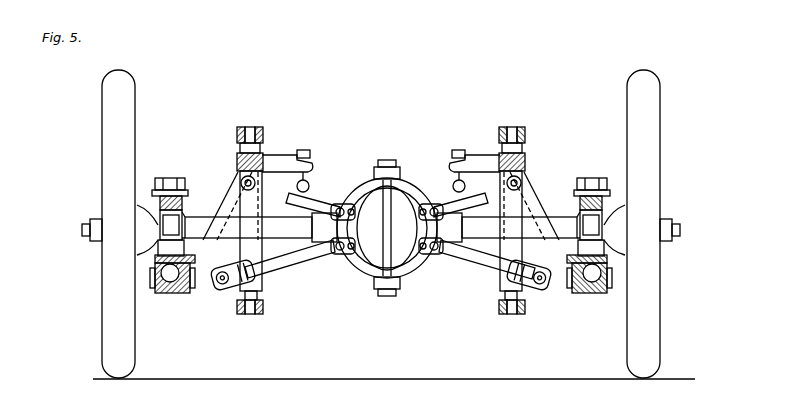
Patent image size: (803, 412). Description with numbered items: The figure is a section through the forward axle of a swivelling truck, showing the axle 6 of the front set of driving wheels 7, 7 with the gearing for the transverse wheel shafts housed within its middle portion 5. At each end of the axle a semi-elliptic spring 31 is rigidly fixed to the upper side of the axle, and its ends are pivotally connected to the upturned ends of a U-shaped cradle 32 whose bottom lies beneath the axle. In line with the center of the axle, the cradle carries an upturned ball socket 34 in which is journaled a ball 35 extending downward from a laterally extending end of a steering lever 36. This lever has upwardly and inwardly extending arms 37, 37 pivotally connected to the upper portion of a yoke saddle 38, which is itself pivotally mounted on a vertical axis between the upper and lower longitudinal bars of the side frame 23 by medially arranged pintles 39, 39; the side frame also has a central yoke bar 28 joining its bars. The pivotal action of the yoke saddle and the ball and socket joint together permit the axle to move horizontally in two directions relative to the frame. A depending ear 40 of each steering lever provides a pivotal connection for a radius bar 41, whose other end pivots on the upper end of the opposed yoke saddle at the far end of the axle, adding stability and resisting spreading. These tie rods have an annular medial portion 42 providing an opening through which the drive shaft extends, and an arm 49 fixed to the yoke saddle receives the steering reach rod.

The middle portion 5 is at (397, 208).
The axle 6 is at (279, 217).
The driving wheels 7 is at (102, 112).
The side frame 23 is at (264, 146).
The central yoke bar 28 is at (263, 151).
The semi-elliptic spring 31 is at (168, 178).
The U-shaped cradle 32 is at (160, 249).
The ball socket 34 is at (176, 294).
The ball 35 is at (170, 283).
The steering lever 36 is at (190, 235).
The upwardly extending arms 37 is at (538, 196).
The yoke saddle 38 is at (263, 291).
The pintles 39 is at (251, 127).
The depending ear 40 is at (232, 287).
The radius bar 41 is at (312, 205).
The annular medial portion 42 is at (376, 279).
The arm 49 is at (283, 161).